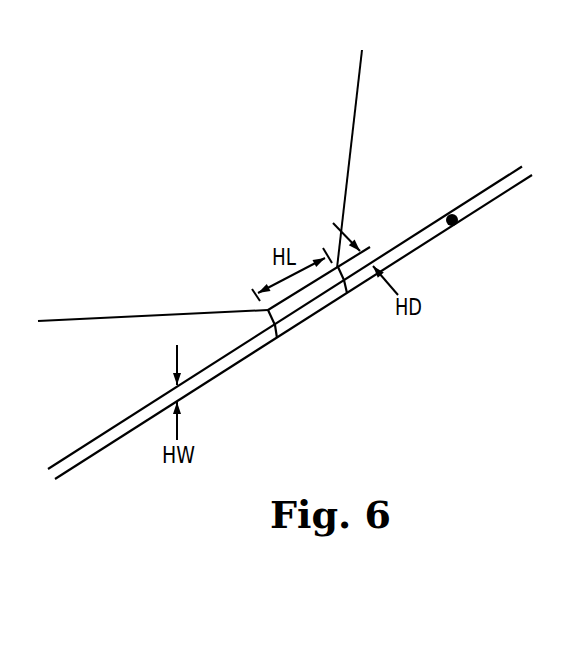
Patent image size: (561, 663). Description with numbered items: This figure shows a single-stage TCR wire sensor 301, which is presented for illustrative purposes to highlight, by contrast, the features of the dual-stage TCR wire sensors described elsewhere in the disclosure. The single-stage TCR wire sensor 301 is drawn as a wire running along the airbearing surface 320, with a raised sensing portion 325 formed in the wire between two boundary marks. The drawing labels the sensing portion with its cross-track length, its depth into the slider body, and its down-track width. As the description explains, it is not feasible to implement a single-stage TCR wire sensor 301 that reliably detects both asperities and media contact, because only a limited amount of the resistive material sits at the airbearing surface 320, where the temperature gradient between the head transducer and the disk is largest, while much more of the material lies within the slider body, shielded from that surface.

The single-stage TCR wire sensor 301 is at (267, 152).
The airbearing surface 320 is at (456, 226).
The hinge 325 is at (308, 318).